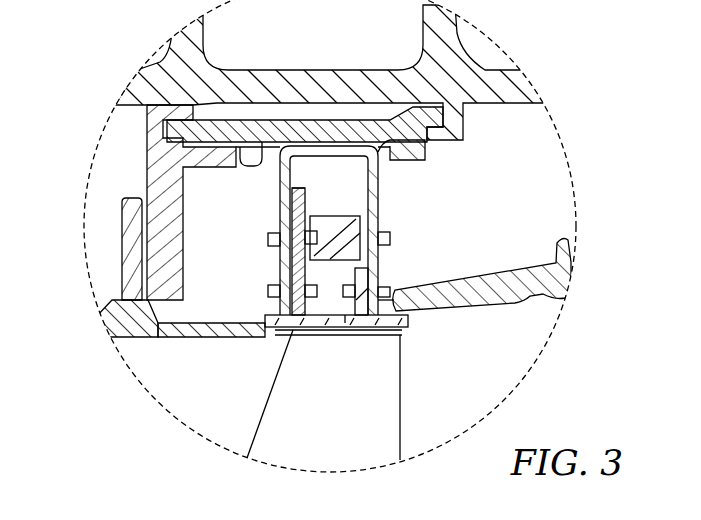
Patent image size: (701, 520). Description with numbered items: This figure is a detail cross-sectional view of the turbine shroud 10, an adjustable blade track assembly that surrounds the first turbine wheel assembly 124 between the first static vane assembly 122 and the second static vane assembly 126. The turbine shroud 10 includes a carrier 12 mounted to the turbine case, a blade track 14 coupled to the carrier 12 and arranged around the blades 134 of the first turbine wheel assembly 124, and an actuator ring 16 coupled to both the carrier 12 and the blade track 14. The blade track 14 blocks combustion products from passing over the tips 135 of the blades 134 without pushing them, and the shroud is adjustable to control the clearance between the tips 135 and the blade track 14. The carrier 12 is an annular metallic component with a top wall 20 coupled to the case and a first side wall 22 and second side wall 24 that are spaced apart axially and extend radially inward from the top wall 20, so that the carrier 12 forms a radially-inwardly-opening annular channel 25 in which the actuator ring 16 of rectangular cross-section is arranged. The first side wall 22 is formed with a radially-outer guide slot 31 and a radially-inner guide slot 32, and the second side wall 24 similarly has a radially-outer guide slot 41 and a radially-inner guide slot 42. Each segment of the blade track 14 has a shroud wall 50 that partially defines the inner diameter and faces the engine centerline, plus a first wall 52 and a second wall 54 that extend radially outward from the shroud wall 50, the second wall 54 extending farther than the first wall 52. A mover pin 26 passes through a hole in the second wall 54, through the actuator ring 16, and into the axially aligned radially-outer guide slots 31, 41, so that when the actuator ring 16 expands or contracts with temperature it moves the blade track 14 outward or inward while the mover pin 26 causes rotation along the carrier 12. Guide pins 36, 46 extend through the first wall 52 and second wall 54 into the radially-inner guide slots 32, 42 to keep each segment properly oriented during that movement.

The turbine shroud 10 is at (447, 202).
The carrier 12 is at (233, 138).
The blade track 14 is at (376, 336).
The actuator ring 16 is at (331, 201).
The top wall 20 is at (328, 136).
The first side wall 22 is at (382, 181).
The second side wall 24 is at (278, 181).
The channel 25 is at (341, 189).
The mover pin 26 is at (266, 239).
The radially-outer guide slot 31 is at (391, 223).
The radially-inner guide slot 32 is at (392, 263).
The guide pin 36 is at (389, 286).
The radially-outer guide slot 41 is at (286, 216).
The radially-inner guide slot 42 is at (282, 270).
The guide pin 46 is at (270, 272).
The shroud wall 50 is at (289, 338).
The first wall 52 is at (387, 292).
The second wall 54 is at (286, 314).
The first static vane assembly 122 is at (121, 292).
The first turbine wheel assembly 124 is at (398, 432).
The second static vane assembly 126 is at (560, 249).
The blade 134 is at (277, 427).
The tip 135 is at (346, 325).